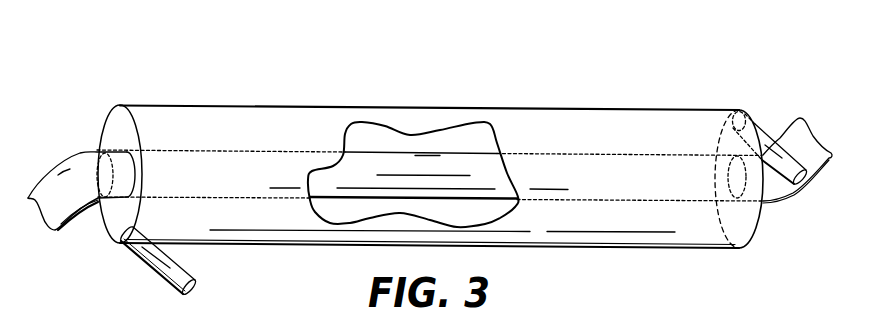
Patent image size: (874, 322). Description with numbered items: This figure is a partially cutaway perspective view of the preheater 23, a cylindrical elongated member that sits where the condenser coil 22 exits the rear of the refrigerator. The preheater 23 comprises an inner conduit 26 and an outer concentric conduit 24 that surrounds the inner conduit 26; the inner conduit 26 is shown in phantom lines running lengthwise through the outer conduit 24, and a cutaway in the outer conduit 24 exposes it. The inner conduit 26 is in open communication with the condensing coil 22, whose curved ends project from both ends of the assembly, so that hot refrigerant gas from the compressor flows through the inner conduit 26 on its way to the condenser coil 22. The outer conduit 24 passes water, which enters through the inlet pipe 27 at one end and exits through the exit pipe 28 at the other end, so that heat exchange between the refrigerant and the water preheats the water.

The condensing coil 22 is at (50, 167).
The preheater 23 is at (287, 245).
The outer concentric conduit 24 is at (653, 108).
The inner conduit 26 is at (563, 200).
The inlet pipe 27 is at (148, 268).
The exit pipe 28 is at (768, 143).